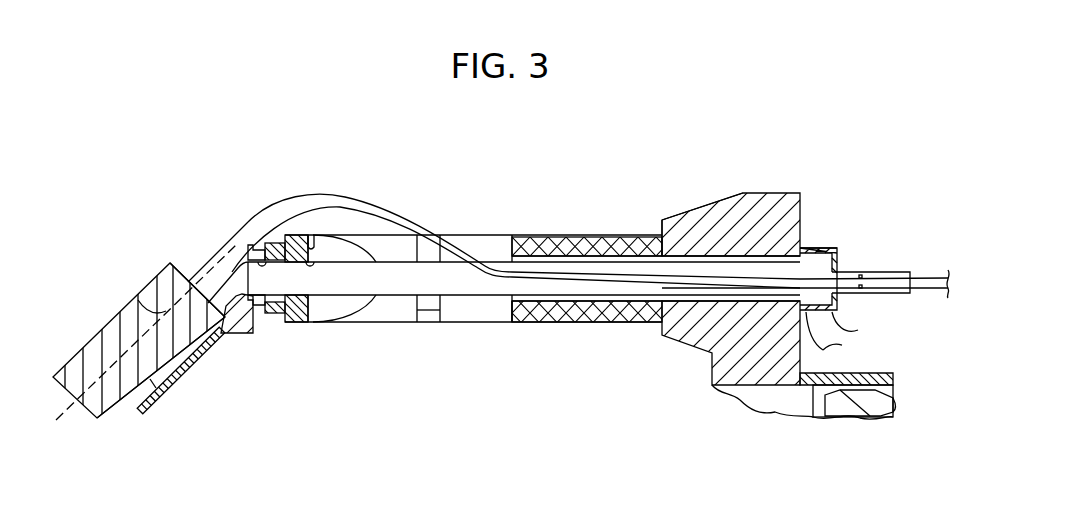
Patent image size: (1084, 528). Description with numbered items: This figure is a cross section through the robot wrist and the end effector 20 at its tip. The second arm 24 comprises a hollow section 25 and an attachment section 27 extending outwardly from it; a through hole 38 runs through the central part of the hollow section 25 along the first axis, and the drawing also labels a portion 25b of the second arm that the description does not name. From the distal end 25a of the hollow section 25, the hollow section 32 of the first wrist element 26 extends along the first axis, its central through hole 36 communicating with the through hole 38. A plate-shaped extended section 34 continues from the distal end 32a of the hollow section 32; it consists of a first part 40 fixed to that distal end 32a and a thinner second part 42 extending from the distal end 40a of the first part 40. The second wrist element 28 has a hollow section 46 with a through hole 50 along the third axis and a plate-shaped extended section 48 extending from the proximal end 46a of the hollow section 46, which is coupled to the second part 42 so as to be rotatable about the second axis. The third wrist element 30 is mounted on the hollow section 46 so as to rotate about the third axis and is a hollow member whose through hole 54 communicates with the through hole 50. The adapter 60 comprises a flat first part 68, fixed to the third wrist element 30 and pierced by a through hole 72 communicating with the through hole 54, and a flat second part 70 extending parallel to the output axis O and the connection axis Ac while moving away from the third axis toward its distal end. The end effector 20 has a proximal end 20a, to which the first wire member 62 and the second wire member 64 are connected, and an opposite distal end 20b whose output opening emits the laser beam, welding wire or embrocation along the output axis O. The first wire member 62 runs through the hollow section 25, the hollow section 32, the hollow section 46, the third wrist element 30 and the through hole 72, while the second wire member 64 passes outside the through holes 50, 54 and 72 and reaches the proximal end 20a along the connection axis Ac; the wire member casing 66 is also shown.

The end effector 20 is at (77, 352).
The proximal end 20a is at (172, 262).
The distal end 20b is at (97, 421).
The output axis O is at (58, 424).
The connection axis Ac is at (138, 300).
The second arm 24 is at (763, 281).
The hollow section 25 is at (727, 206).
The distal end 25a is at (666, 221).
The rear surface of holder 25b is at (833, 248).
The first wrist element 26 is at (633, 307).
The attachment section 27 is at (740, 400).
The second wrist element 28 is at (319, 284).
The third wrist element 30 is at (268, 314).
The hollow section 32 is at (540, 246).
The distal end 32a is at (511, 312).
The extended section 34 is at (473, 250).
The through hole 36 is at (554, 296).
The through hole 38 is at (803, 246).
The first part 40 is at (470, 241).
The distal end 40a is at (416, 311).
The second part 42 is at (386, 241).
The hollow section 46 is at (296, 323).
The proximal end 46a is at (310, 236).
The extended section 48 is at (328, 312).
The through hole 50 is at (312, 261).
The through hole 54 is at (255, 245).
The adapter 60 is at (195, 380).
The first wire member 62 is at (380, 287).
The second wire member 64 is at (488, 266).
The wire member casing 66 is at (895, 258).
The first part 68 is at (243, 340).
The second part 70 is at (200, 366).
The through hole 72 is at (224, 250).